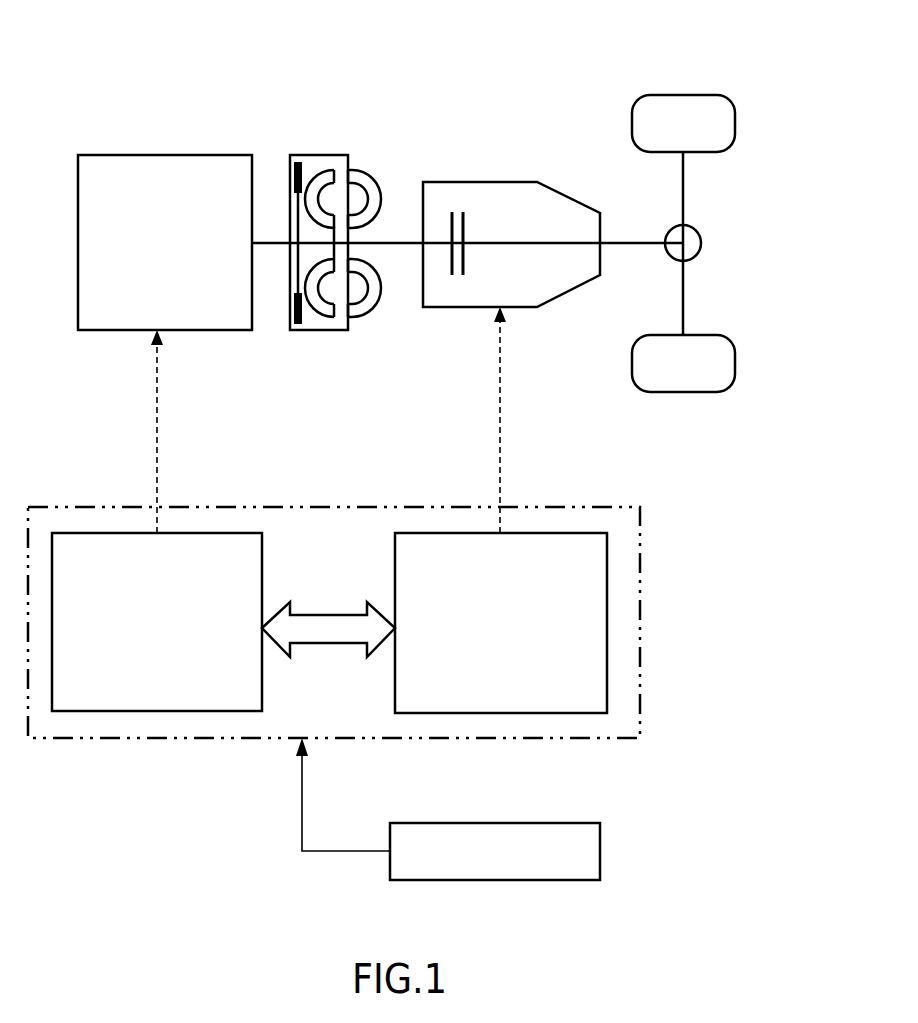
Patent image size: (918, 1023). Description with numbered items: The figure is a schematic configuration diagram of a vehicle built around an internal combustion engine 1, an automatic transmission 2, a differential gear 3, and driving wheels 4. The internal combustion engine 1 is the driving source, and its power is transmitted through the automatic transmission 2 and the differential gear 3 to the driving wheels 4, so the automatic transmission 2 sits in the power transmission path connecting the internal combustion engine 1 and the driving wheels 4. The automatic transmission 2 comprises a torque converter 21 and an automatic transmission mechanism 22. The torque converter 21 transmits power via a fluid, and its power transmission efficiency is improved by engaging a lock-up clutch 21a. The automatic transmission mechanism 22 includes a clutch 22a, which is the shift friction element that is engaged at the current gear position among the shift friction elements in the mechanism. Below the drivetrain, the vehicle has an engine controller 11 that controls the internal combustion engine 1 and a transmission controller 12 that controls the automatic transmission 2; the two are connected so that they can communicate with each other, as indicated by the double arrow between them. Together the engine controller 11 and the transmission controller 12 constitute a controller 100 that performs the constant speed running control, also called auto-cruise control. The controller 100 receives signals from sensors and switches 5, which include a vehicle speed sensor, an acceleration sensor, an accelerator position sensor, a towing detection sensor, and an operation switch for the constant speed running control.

The internal combustion engine 1 is at (170, 155).
The automatic transmission 2 is at (425, 72).
The torque converter 21 is at (323, 155).
The lock-up clutch 21a is at (294, 323).
The automatic transmission mechanism 22 is at (480, 182).
The clutch 22a is at (450, 273).
The differential gear 3 is at (703, 243).
The driving wheels 4 is at (737, 122).
The controller 100 is at (643, 630).
The engine controller 11 is at (155, 711).
The transmission controller 12 is at (498, 713).
The sensors and switches 5 is at (602, 847).